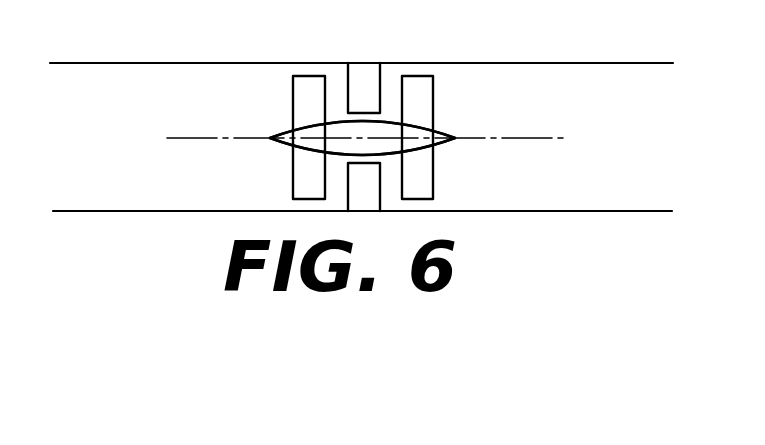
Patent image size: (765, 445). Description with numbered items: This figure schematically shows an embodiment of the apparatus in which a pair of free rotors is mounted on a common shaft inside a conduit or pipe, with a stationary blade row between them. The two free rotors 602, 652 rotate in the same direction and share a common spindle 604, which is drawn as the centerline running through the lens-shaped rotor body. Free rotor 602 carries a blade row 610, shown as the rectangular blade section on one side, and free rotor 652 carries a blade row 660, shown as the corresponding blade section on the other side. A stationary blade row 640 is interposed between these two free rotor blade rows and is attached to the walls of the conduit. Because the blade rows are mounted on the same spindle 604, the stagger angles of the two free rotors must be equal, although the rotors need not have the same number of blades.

The stationary blade row 640 is at (363, 77).
The blade row 610 is at (418, 90).
The blade row 660 is at (310, 173).
The free rotor 652 is at (270, 133).
The free rotor 602 is at (447, 123).
The common spindle 604 is at (433, 139).